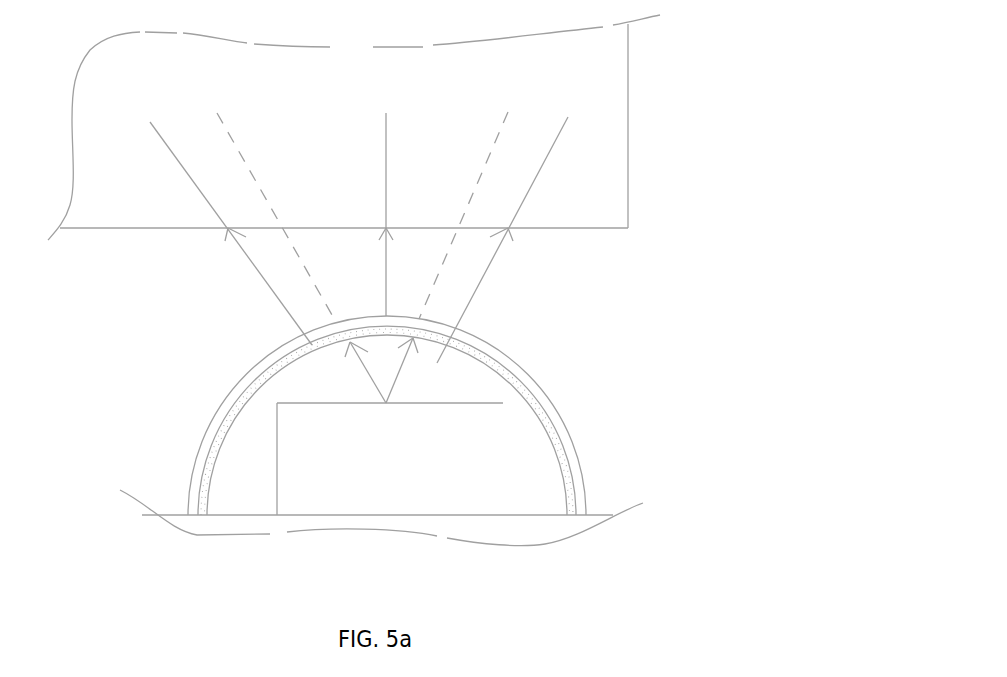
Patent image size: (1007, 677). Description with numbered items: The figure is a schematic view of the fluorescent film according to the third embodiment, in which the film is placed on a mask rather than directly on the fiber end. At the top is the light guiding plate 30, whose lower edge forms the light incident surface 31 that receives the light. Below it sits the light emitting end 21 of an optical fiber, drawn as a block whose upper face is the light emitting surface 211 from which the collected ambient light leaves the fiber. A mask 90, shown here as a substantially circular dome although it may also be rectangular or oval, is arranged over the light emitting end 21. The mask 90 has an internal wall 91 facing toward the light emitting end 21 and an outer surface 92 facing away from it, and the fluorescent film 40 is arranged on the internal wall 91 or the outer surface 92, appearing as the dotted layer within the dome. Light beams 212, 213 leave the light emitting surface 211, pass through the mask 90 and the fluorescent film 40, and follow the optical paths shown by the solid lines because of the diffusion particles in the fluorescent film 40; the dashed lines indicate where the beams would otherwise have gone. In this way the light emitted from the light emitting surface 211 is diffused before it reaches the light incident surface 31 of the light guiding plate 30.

The light guiding plate 30 is at (595, 94).
The light incident surface 31 is at (560, 228).
The light emitting end 21 is at (447, 471).
The light emitting surface 211 is at (447, 402).
The light beam 212 is at (363, 375).
The light beam 213 is at (400, 375).
The fluorescent film 40 is at (555, 437).
The mask 90 is at (198, 478).
The internal wall 91 is at (205, 512).
The outer surface 92 is at (210, 438).